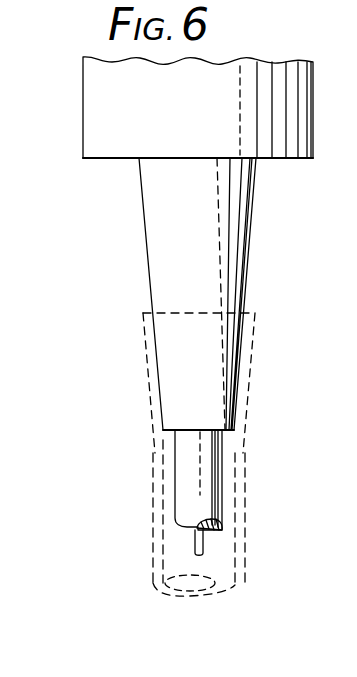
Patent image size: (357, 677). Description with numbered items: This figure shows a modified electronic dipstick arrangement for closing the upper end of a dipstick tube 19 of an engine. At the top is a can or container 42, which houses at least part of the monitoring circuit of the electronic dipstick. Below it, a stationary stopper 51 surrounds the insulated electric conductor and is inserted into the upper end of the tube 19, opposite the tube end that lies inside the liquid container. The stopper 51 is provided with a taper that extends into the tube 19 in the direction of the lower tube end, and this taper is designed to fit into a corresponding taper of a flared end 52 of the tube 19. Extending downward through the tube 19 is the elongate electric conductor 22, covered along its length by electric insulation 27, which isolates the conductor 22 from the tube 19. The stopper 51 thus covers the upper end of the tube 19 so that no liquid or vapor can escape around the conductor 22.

The can or container 42 is at (83, 108).
The stationary stopper 51 is at (153, 257).
The flared end 52 is at (149, 385).
The dipstick tube 19 is at (247, 531).
The electric insulation 27 is at (175, 494).
The elongate electric conductor 22 is at (195, 545).